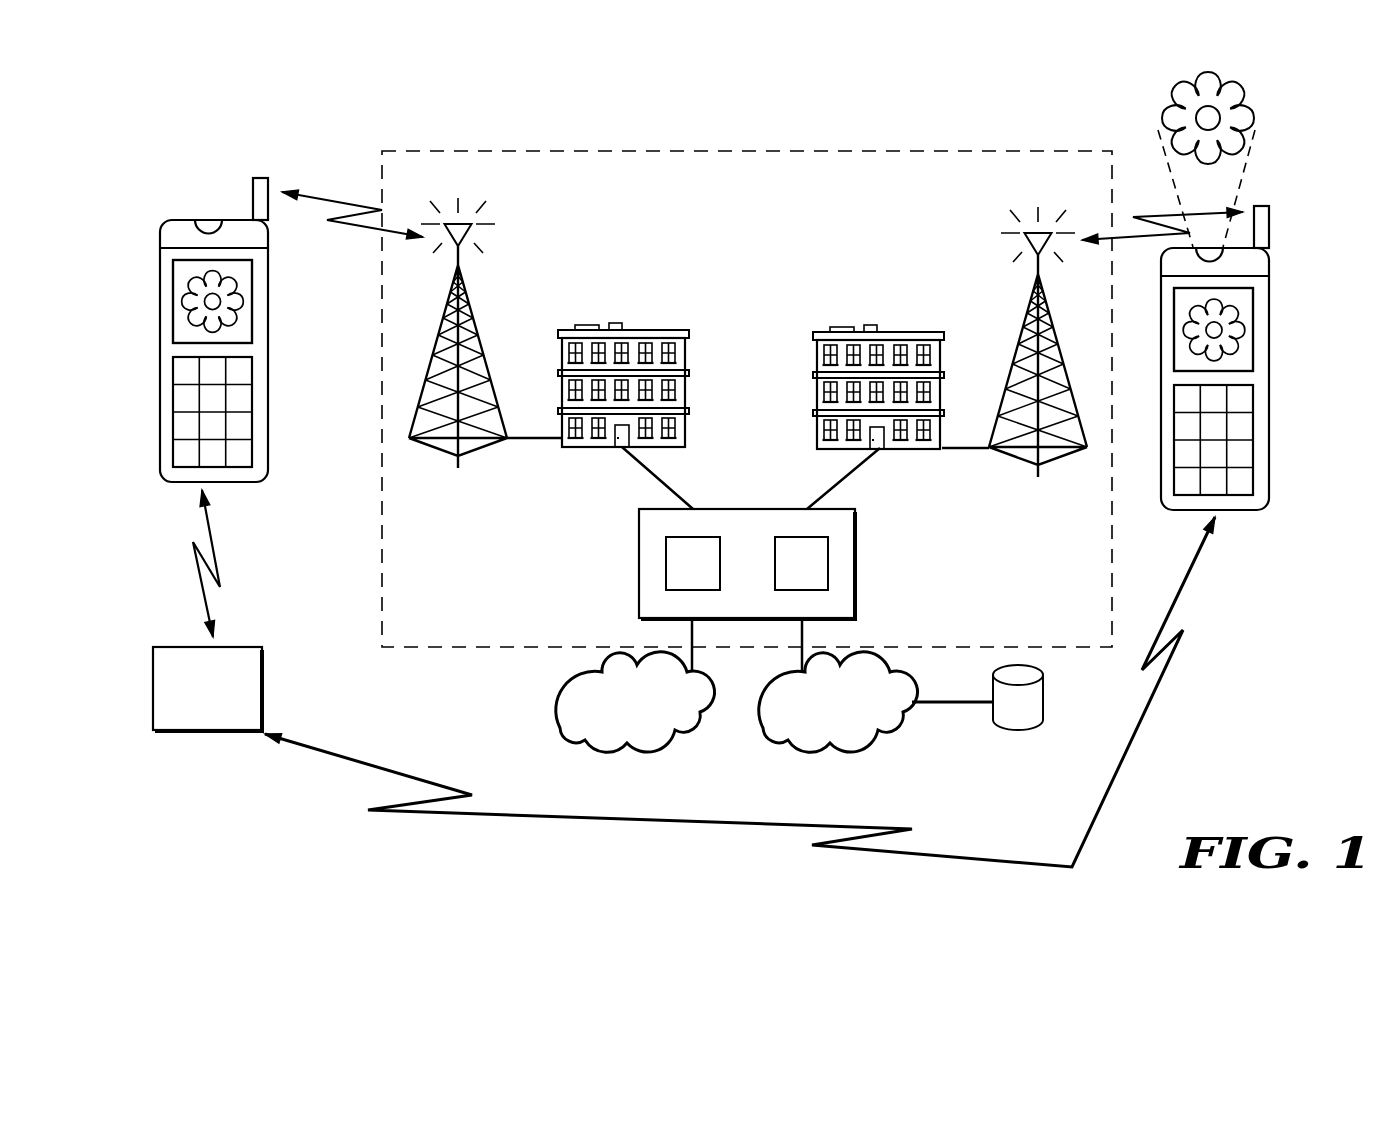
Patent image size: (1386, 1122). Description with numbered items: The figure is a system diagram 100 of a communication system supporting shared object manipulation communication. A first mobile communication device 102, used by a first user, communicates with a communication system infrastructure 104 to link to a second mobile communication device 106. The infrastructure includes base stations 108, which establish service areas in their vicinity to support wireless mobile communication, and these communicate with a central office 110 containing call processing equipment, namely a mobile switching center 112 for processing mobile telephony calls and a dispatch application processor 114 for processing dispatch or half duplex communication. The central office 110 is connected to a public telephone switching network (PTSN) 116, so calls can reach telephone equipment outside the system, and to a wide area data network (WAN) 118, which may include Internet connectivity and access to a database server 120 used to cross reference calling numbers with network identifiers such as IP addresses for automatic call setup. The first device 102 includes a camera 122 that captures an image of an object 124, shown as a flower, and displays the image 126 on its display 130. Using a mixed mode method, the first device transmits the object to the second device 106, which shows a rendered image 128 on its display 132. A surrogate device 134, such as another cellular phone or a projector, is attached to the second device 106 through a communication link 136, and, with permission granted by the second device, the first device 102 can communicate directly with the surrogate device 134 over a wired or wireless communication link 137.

The system diagram 100 is at (1315, 785).
The first mobile communication device 102 is at (1260, 358).
The communication system infrastructure 104 is at (382, 151).
The second mobile communication device 106 is at (175, 330).
The base stations 108 is at (562, 330).
The central office 110 is at (740, 547).
The mobile switching center 112 is at (666, 537).
The dispatch application processor 114 is at (828, 537).
The public telephone switching network (PTSN) 116 is at (570, 680).
The wide area data network (WAN) 118 is at (845, 750).
The database server 120 is at (1036, 692).
The camera 122 is at (1172, 252).
The object 124 is at (1248, 108).
The image 126 is at (1227, 340).
The rendered image 128 is at (181, 272).
The display 130 is at (1248, 298).
The display 132 is at (182, 331).
The surrogate device 134 is at (208, 689).
The communication link 136 is at (217, 562).
The communication link 137 is at (393, 811).